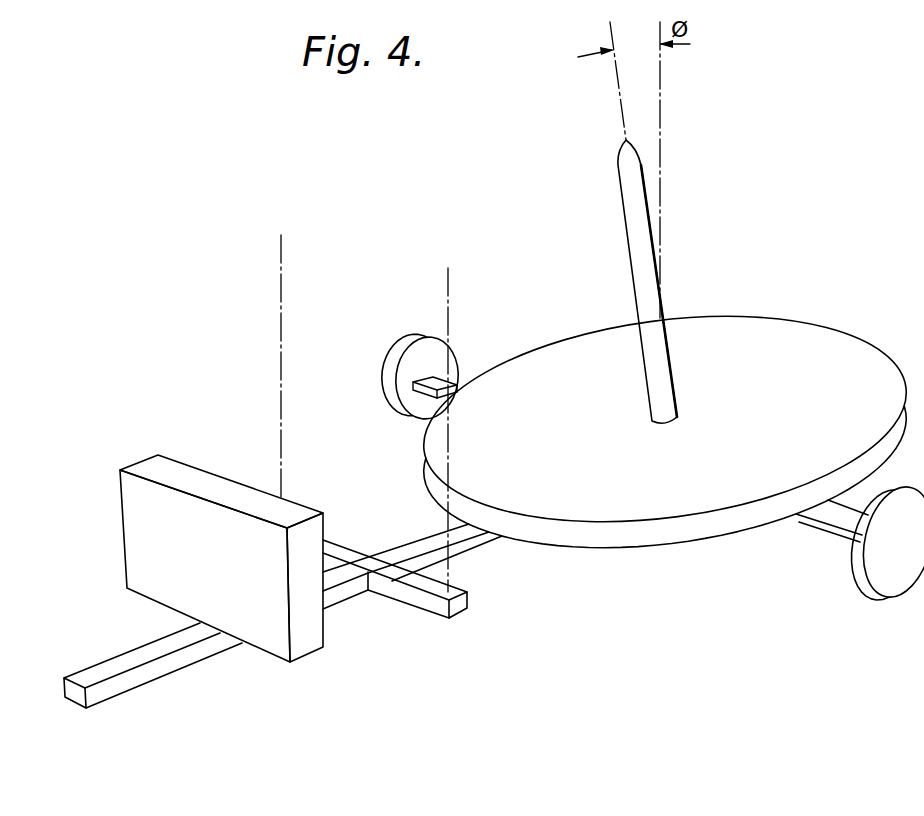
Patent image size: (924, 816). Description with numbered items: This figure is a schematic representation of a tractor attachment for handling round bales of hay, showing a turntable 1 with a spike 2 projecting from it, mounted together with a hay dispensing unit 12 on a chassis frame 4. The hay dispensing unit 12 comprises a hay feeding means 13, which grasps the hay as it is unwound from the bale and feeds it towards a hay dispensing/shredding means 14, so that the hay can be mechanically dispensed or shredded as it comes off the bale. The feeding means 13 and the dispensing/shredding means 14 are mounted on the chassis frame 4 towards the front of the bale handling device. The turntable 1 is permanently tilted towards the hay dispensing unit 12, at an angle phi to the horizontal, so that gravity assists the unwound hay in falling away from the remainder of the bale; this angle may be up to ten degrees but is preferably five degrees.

The turntable 1 is at (703, 497).
The stylus 2 is at (632, 203).
The chassis frame 4 is at (473, 533).
The hay dispensing unit 12 is at (394, 622).
The hay feeding means 13 is at (281, 244).
The hay dispensing/shredding means 14 is at (140, 504).